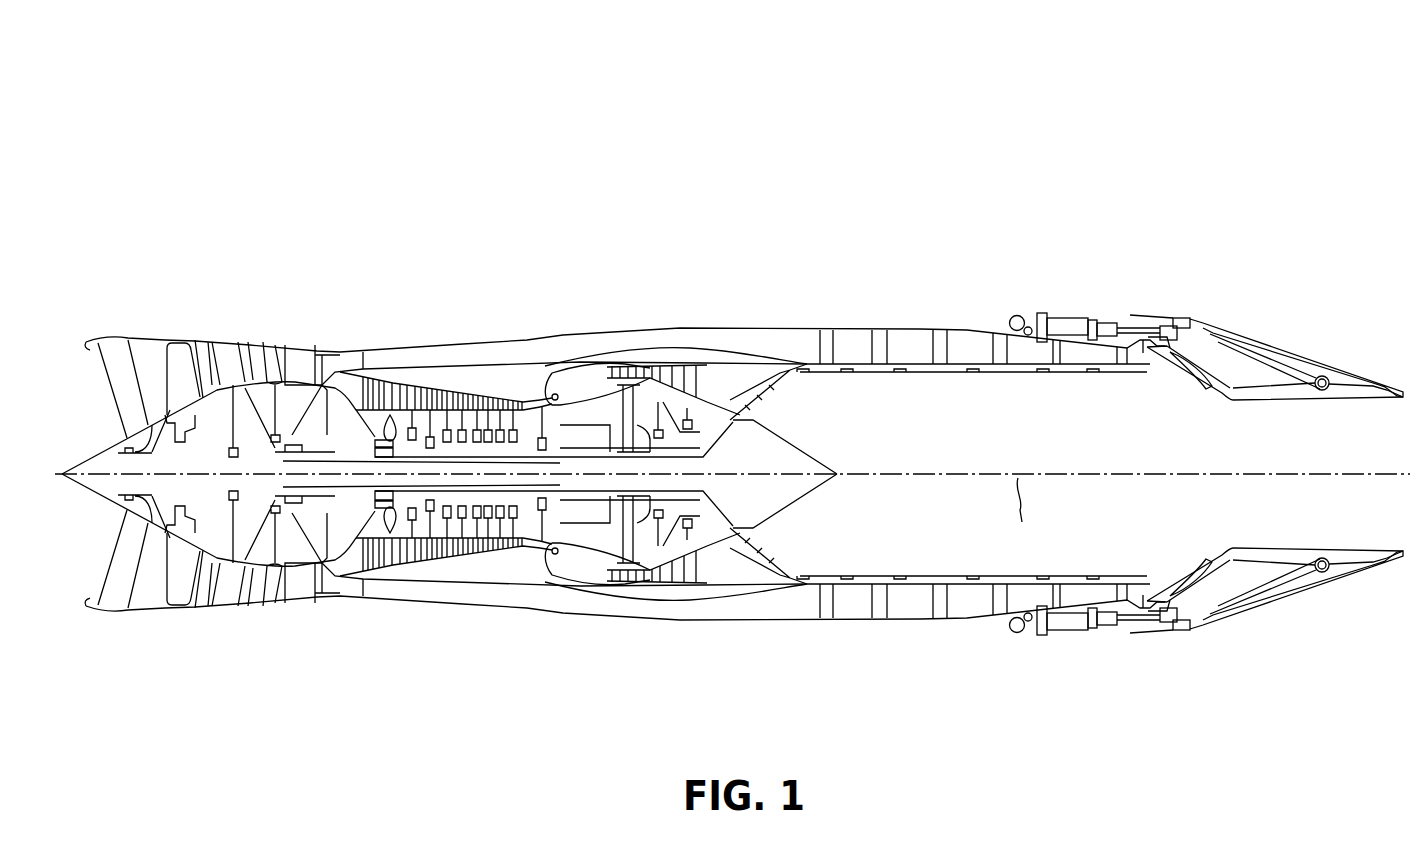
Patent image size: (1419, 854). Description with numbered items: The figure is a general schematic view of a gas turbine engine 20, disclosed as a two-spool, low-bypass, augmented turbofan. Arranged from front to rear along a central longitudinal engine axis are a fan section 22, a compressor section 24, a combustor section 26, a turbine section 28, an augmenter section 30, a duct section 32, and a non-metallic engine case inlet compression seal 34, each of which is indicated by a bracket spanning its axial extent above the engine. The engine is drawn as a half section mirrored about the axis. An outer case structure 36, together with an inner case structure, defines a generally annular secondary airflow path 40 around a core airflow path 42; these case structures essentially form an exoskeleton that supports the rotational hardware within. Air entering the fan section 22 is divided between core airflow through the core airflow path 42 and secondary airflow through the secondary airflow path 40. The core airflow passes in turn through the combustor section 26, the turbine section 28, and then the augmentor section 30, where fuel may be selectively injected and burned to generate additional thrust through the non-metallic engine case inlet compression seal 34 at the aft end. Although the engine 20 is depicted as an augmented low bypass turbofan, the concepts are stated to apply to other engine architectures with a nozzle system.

The gas turbine engine 20 is at (1047, 145).
The fan section 22 is at (87, 262).
The compressor section 24 is at (315, 262).
The combustor section 26 is at (545, 262).
The turbine section 28 is at (623, 262).
The augmentor section 30 is at (845, 262).
The duct section 32 is at (845, 262).
The non-metallic engine case inlet compression seal 34 is at (1138, 262).
The outer case structure 36 is at (657, 619).
The secondary airflow path 40 is at (413, 594).
The core airflow path 42 is at (315, 585).